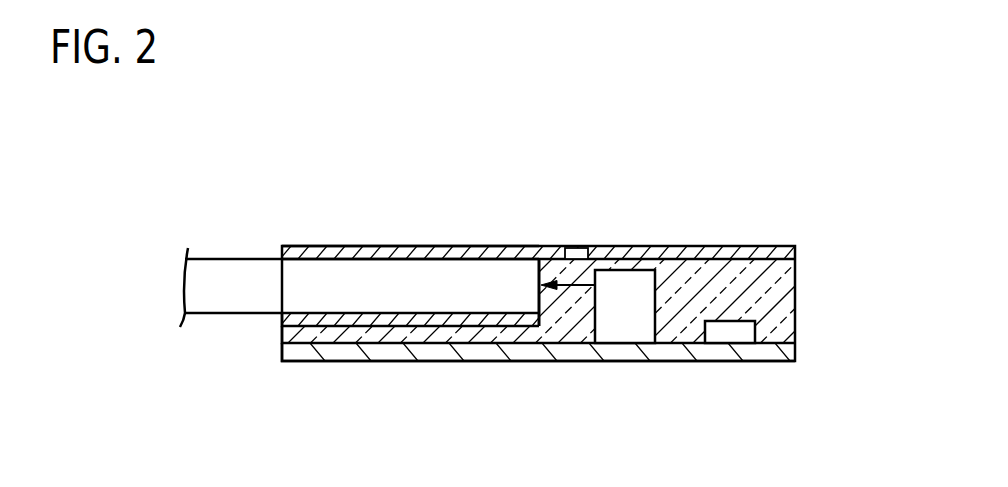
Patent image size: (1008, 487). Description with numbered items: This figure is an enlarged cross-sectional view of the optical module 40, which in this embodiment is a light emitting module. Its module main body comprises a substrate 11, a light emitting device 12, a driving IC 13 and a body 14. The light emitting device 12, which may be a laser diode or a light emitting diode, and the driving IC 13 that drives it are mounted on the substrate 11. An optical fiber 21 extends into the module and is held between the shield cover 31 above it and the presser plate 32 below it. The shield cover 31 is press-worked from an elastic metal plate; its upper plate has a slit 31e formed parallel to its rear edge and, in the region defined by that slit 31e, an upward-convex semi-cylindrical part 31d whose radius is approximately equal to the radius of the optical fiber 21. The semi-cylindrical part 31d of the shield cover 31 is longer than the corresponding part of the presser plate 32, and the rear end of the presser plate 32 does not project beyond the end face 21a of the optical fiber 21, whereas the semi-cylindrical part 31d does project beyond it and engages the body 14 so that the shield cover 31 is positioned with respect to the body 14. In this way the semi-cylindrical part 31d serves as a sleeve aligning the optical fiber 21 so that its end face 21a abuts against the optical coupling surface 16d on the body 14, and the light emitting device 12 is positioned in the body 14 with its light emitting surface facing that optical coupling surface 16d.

The optical module 40 is at (278, 140).
The substrate 11 is at (796, 350).
The light emitting device 12 is at (622, 327).
The driving IC 13 is at (740, 333).
The body 14 is at (796, 270).
The optical coupling surface 16d is at (538, 297).
The optical fiber 21 is at (217, 315).
The end face of the optical fiber 21a is at (541, 272).
The shield cover 31 is at (703, 245).
The semi-cylindrical part 31d is at (373, 246).
The slit 31e is at (574, 247).
The presser plate 32 is at (355, 320).